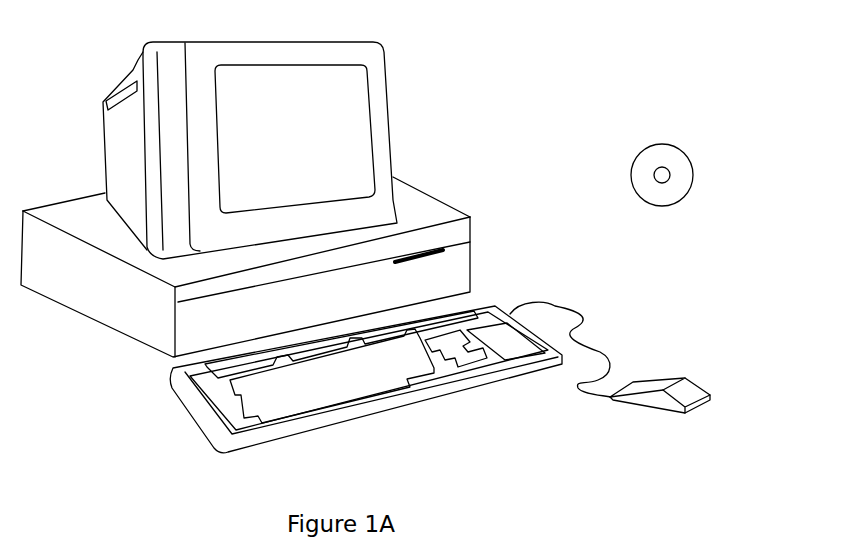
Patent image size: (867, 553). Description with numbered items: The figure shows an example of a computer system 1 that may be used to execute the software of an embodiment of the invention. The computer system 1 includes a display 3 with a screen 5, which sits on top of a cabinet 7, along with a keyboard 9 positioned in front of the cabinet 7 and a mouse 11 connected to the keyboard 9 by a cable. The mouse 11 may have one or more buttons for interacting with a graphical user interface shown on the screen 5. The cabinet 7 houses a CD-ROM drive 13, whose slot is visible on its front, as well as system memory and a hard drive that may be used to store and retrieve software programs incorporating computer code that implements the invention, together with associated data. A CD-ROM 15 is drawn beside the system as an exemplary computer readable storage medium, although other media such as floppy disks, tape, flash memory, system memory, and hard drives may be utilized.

The computer system 1 is at (590, 26).
The display 3 is at (393, 152).
The screen 5 is at (363, 83).
The cabinet 7 is at (135, 340).
The keyboard 9 is at (370, 415).
The mouse 11 is at (697, 384).
The CD-ROM drive 13 is at (447, 242).
The CD-ROM 15 is at (677, 146).